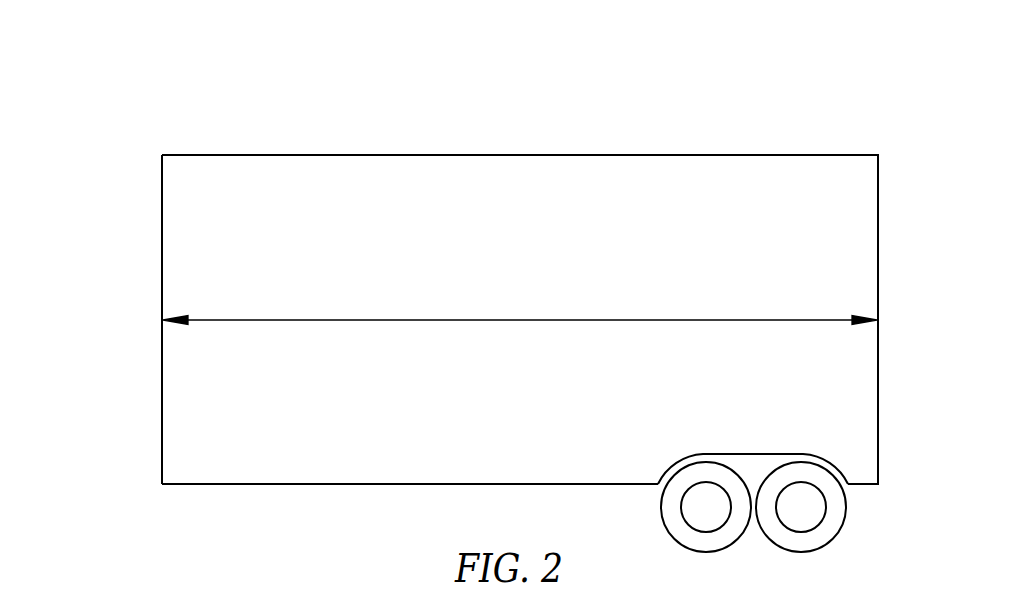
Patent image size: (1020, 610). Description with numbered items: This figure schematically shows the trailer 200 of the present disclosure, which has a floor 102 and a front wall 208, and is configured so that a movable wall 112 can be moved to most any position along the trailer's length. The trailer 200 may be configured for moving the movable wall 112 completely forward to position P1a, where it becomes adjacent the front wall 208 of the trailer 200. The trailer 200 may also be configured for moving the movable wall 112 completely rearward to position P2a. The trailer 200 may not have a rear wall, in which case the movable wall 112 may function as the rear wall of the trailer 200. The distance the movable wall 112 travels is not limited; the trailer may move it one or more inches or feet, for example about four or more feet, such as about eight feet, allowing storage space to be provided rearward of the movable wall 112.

The trailer 200 is at (120, 113).
The movable wall 112 is at (162, 194).
The position P1a is at (162, 155).
The position P2a is at (878, 155).
The front wall 208 is at (162, 430).
The floor 102 is at (595, 484).